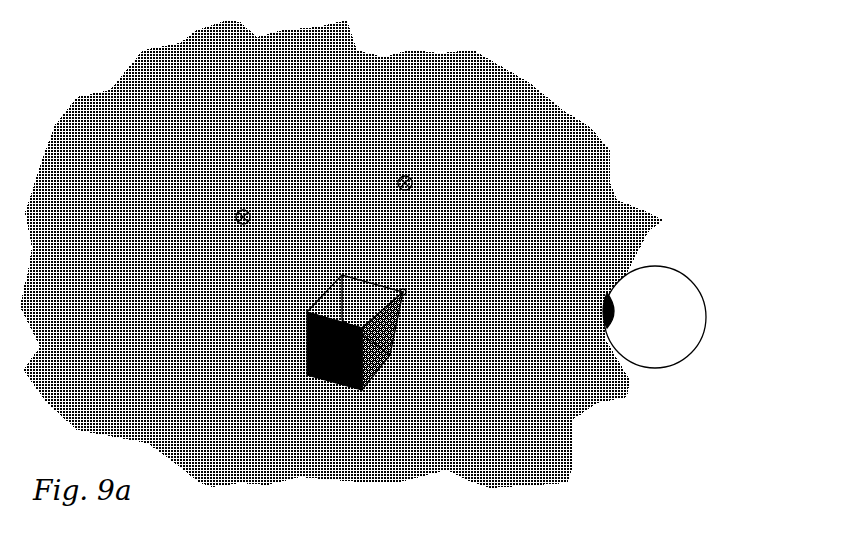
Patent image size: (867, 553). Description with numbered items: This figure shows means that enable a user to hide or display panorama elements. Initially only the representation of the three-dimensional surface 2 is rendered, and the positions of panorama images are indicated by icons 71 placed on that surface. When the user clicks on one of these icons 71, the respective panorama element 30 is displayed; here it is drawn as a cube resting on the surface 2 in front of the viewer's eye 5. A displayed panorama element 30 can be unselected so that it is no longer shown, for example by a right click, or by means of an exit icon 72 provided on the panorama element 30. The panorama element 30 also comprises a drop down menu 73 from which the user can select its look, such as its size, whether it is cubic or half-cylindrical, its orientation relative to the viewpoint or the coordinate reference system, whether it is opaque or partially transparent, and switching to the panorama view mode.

The three-dimensional surface 2 is at (346, 254).
The eye of viewer 5 is at (673, 250).
The panorama element 30 is at (307, 398).
The icons 71 is at (322, 137).
The exit icon 72 is at (473, 406).
The drop down menu 73 is at (405, 429).